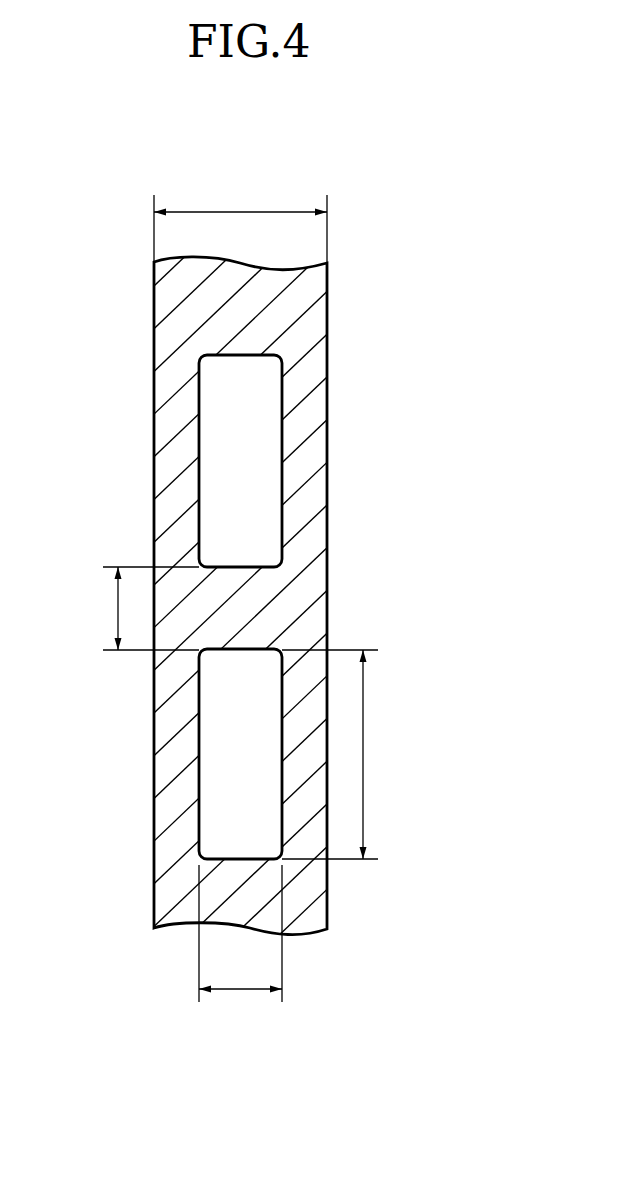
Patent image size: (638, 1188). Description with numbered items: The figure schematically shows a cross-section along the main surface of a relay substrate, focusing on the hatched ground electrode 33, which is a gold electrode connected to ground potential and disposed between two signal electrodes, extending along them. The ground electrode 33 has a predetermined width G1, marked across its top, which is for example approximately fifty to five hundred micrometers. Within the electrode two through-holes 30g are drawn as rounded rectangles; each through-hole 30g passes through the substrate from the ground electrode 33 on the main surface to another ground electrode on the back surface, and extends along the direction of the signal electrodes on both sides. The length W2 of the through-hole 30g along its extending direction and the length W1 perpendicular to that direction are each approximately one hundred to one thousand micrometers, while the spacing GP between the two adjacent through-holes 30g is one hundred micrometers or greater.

The ground electrode 33 is at (313, 316).
The through-hole 30g is at (238, 565).
The width of the ground electrode G1 is at (240, 222).
The spacing between the through-holes GP is at (135, 608).
The length of the through-hole perpendicular to its extending direction W1 is at (240, 943).
The length of the through-hole along its extending direction W2 is at (348, 754).